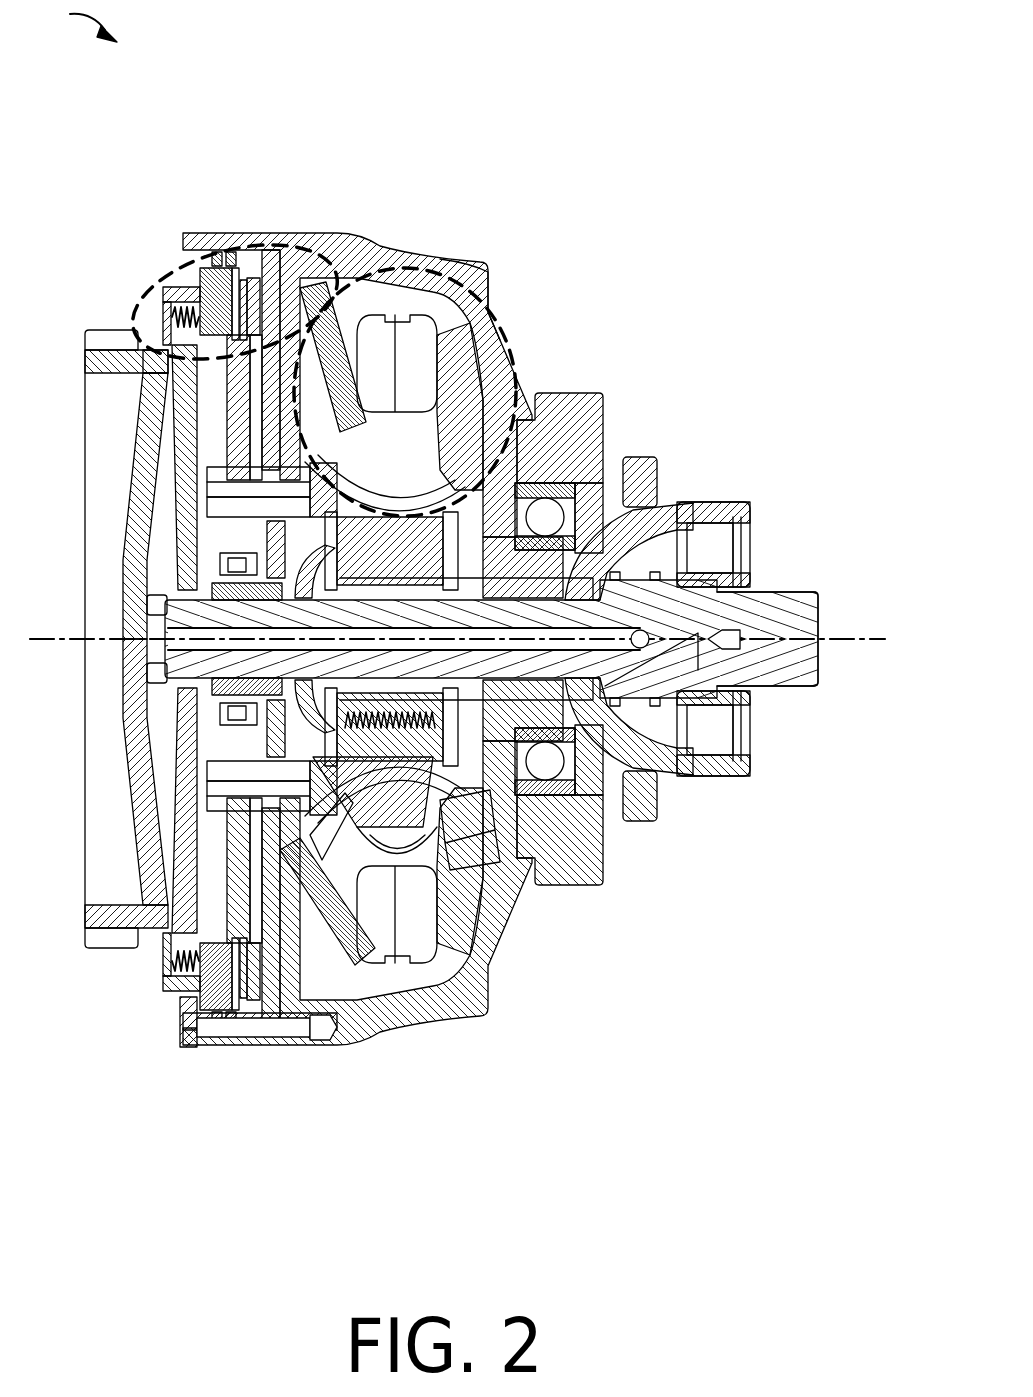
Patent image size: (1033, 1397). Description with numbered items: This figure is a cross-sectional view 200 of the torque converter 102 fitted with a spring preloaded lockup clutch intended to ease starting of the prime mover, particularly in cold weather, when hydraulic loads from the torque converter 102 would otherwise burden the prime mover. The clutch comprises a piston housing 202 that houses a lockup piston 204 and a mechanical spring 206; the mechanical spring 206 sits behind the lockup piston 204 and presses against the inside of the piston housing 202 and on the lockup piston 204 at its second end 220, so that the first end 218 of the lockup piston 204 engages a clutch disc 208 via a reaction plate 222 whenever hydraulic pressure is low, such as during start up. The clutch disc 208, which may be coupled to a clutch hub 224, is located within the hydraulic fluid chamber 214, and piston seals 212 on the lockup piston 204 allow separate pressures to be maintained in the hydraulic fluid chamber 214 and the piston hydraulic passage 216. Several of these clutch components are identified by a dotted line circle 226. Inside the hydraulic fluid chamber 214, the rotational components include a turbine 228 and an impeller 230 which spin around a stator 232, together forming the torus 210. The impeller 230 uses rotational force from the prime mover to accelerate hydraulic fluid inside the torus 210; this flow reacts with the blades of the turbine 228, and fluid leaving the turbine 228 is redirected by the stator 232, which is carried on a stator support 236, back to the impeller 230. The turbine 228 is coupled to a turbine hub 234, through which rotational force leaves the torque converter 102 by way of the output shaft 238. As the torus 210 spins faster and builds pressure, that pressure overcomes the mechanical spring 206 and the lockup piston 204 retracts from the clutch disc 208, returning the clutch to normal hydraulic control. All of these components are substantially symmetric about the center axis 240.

The cross-sectional view 200 is at (66, 22).
The torque converter 102 is at (380, 252).
The piston housing 202 is at (95, 355).
The lockup piston 204 is at (212, 330).
The mechanical spring 206 is at (187, 312).
The clutch disc 208 is at (280, 300).
The torus 210 is at (457, 287).
The piston seals 212 is at (220, 307).
The hydraulic fluid chamber 214 is at (260, 348).
The piston hydraulic passage 216 is at (175, 437).
The first end 218 is at (205, 297).
The second end 220 is at (207, 300).
The reaction plate 222 is at (253, 278).
The clutch hub 224 is at (237, 363).
The dotted line circle 226 is at (135, 318).
The turbine 228 is at (347, 385).
The impeller 230 is at (467, 333).
The stator 232 is at (460, 413).
The turbine hub 234 is at (240, 583).
The stator support 236 is at (703, 500).
The output shaft 238 is at (777, 625).
The center axis 240 is at (833, 640).